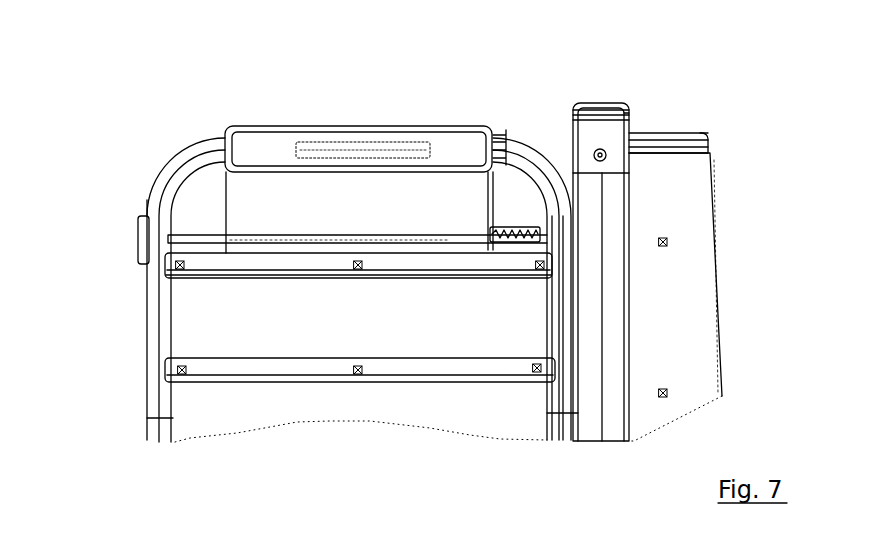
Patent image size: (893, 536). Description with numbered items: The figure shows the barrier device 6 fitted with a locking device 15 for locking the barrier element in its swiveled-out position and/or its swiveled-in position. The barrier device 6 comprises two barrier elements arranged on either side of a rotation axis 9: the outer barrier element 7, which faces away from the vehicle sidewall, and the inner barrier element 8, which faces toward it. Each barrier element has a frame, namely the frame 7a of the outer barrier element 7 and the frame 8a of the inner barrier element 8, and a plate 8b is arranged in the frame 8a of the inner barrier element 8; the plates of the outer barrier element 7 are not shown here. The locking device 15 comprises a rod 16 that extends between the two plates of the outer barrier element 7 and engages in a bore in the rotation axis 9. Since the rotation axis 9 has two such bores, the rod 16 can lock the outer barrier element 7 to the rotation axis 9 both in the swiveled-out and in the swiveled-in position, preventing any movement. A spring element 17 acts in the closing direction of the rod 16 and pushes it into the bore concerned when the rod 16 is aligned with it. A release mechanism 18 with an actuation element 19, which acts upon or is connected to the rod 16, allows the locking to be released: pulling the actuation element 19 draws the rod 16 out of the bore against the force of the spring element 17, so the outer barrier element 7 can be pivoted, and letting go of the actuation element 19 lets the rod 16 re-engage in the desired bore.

The barrier device 6 is at (632, 118).
The outer barrier element 7 is at (263, 150).
The frame 7a is at (190, 160).
The inner barrier element 8 is at (677, 138).
The frame 8a is at (692, 136).
The plate 8b is at (702, 319).
The rotation axis 9 is at (592, 128).
The locking device 15 is at (415, 232).
The rod 16 is at (377, 237).
The spring element 17 is at (520, 229).
The release mechanism 18 is at (141, 206).
The actuation element 19 is at (142, 241).